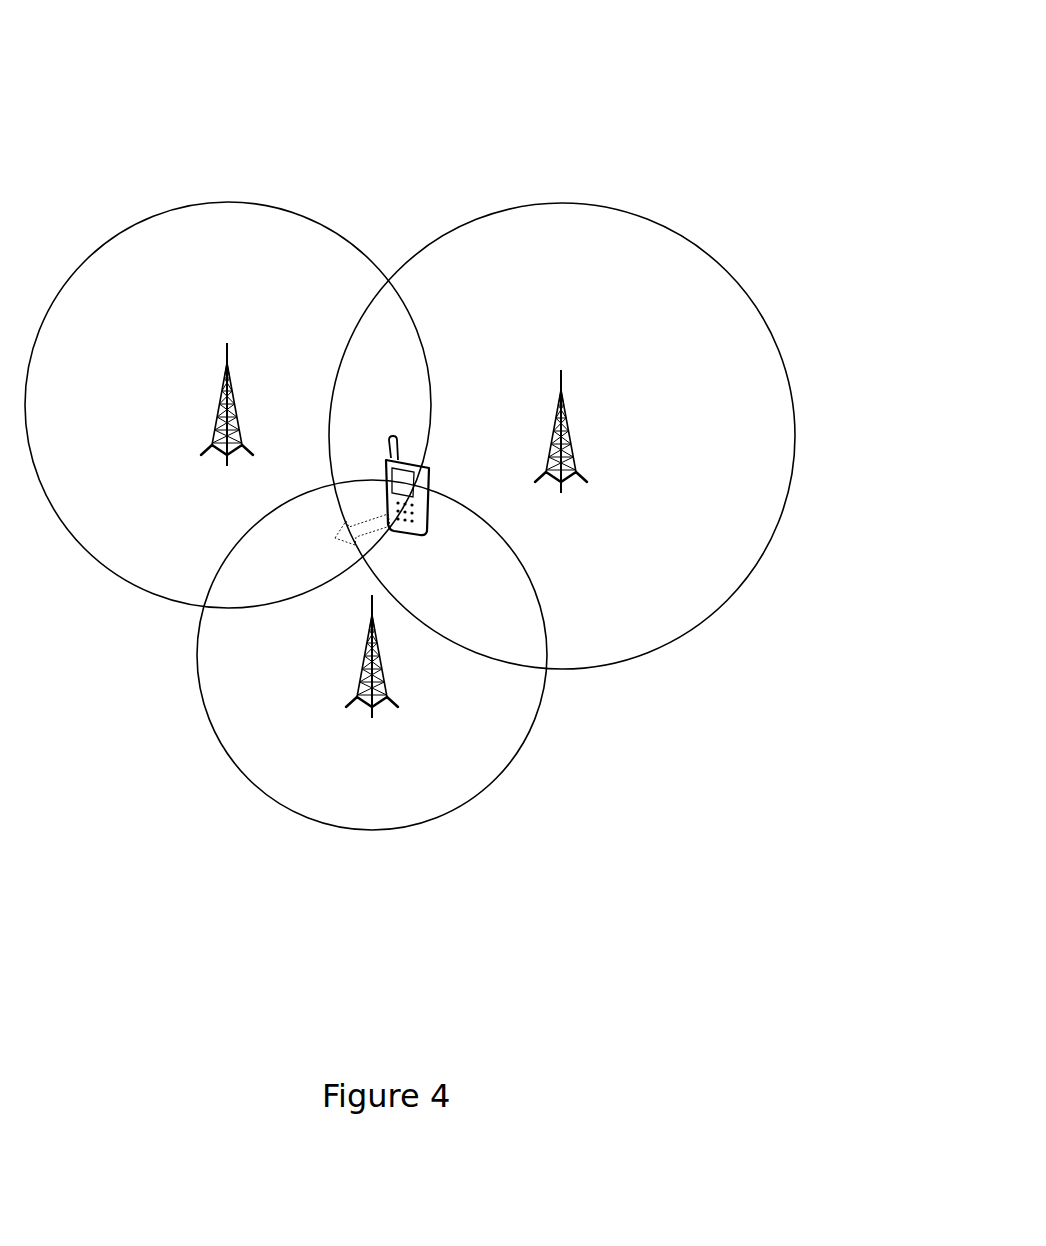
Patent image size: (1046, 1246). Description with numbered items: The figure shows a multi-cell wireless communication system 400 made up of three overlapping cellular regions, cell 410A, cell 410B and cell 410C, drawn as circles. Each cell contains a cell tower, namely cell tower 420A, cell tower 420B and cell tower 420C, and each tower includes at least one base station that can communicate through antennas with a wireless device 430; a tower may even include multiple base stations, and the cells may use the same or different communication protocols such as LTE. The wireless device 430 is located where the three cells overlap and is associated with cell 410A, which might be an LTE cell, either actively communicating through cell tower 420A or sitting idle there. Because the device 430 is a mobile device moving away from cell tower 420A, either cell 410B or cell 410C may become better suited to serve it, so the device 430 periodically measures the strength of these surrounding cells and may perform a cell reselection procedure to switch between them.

The multi-cell wireless communication system 400 is at (650, 88).
The cell 410A is at (583, 243).
The cell 410B is at (248, 243).
The cell 410C is at (396, 808).
The cell tower 420A is at (572, 420).
The cell tower 420B is at (218, 390).
The cell tower 420C is at (357, 663).
The wireless device 430 is at (427, 535).